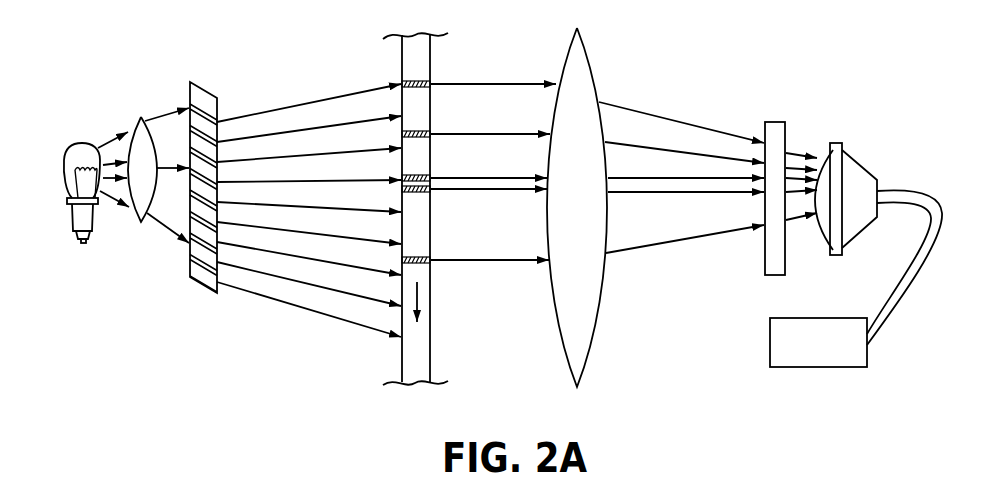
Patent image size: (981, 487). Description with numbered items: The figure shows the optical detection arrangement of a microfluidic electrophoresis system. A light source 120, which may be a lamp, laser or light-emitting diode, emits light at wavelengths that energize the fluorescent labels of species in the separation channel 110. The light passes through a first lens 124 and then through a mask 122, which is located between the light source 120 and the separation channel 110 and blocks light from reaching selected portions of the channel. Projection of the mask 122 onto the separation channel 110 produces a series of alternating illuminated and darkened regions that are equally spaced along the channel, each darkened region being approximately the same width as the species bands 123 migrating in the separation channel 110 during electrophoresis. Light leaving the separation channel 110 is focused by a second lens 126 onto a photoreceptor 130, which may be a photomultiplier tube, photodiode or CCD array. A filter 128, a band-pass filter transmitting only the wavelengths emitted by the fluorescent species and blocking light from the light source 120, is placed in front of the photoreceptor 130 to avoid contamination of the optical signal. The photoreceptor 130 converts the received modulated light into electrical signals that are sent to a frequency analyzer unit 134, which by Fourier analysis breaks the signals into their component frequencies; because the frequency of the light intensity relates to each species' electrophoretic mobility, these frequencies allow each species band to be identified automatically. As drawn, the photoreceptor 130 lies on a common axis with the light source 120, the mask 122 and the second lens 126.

The separation channel 110 is at (424, 53).
The light source 120 is at (92, 240).
The mask 122 is at (203, 97).
The species bands 123 is at (431, 88).
The first lens 124 is at (137, 124).
The second lens 126 is at (590, 60).
The filter 128 is at (787, 128).
The photoreceptor 130 is at (858, 158).
The frequency analyzer unit 134 is at (830, 318).